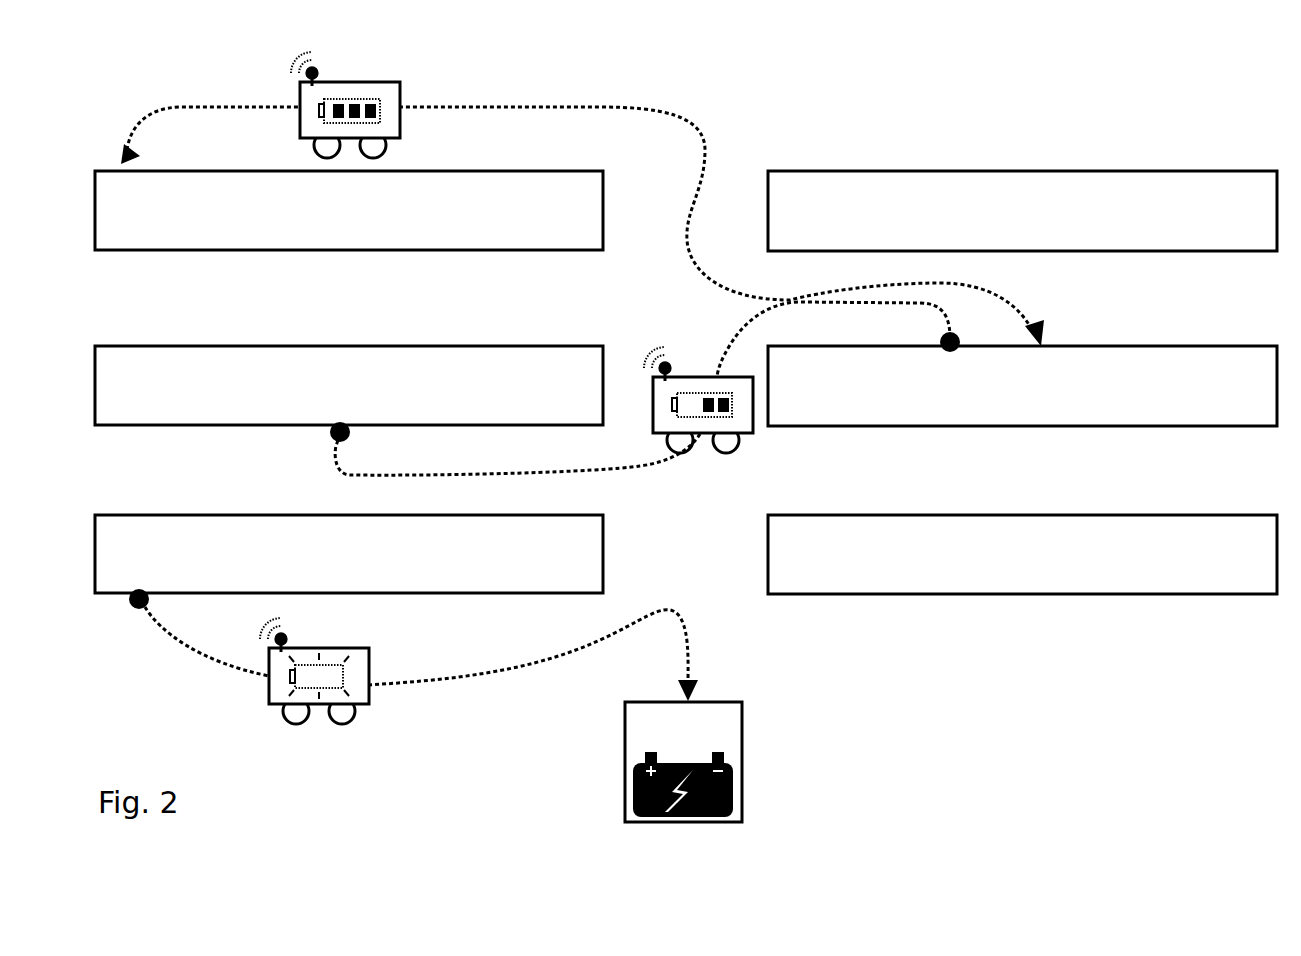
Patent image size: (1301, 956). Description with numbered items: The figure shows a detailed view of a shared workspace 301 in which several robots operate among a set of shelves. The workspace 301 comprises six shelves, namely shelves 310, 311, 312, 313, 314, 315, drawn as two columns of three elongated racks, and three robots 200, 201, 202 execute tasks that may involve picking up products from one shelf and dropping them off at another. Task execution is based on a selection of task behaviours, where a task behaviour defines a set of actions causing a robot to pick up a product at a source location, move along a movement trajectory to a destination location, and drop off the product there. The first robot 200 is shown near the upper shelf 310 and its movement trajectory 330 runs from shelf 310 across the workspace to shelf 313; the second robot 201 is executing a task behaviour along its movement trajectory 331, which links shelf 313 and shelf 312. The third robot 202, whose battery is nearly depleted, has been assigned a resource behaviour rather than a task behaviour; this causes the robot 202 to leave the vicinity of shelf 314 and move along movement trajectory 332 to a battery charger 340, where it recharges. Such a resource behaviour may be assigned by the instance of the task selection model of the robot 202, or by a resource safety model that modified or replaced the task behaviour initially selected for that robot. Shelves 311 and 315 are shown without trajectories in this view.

The robot 200 is at (400, 88).
The robot 201 is at (748, 437).
The robot 202 is at (368, 661).
The shelf 310 is at (328, 224).
The shelf 311 is at (1001, 224).
The shelf 312 is at (328, 400).
The shelf 313 is at (1001, 400).
The shelf 314 is at (325, 567).
The shelf 315 is at (1001, 567).
The movement trajectory 330 is at (628, 110).
The movement trajectory 331 is at (625, 472).
The movement trajectory 332 is at (452, 680).
The battery charger 340 is at (661, 737).
The shared workspace 301 is at (1168, 740).